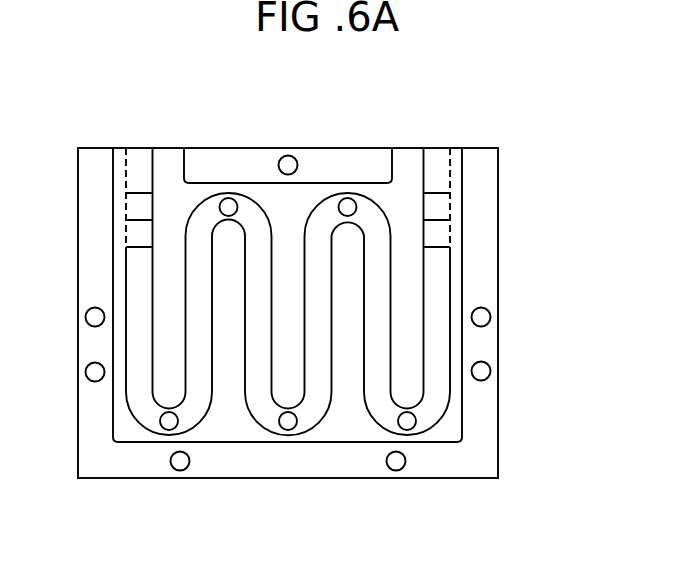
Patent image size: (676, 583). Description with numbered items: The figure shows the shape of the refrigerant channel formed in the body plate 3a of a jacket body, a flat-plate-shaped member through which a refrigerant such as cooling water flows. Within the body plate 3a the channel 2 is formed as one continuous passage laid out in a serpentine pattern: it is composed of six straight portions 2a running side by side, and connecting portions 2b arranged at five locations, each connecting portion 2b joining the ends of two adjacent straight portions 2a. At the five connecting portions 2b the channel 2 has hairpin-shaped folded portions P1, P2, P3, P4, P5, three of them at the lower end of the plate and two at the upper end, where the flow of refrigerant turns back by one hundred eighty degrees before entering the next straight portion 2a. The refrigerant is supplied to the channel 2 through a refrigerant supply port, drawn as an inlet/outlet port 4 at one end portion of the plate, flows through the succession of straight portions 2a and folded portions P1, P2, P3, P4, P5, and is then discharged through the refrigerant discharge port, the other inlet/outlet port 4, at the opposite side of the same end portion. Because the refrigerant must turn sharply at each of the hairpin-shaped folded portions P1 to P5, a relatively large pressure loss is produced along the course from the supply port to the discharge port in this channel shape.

The channel 2 is at (393, 288).
The straight portion 2a is at (130, 340).
The connecting portion 2b is at (246, 205).
The body plate 3a is at (500, 203).
The inlet/outlet port 4 is at (147, 162).
The hairpin-shaped folded portion P1 is at (161, 425).
The hairpin-shaped folded portion P2 is at (221, 200).
The hairpin-shaped folded portion P3 is at (279, 424).
The hairpin-shaped folded portion P4 is at (341, 200).
The hairpin-shaped folded portion P5 is at (413, 427).